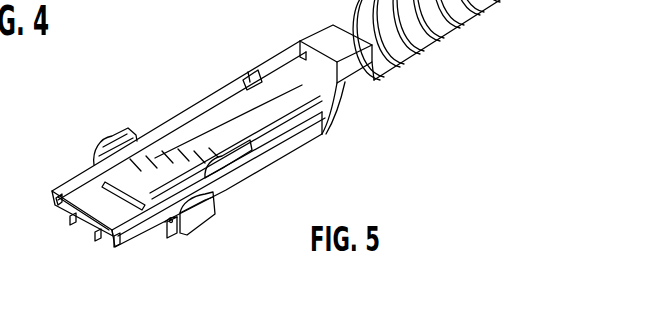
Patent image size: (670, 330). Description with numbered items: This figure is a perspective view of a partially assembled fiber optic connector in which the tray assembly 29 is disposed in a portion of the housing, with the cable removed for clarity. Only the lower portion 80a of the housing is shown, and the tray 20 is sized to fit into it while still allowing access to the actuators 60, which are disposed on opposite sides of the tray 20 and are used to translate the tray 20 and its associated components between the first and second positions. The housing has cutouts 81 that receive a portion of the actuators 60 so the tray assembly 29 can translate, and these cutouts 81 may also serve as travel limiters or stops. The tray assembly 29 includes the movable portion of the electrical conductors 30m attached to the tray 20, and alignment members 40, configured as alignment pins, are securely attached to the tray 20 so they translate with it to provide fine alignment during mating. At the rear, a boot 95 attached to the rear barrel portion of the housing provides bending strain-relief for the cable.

The tray 20 is at (90, 210).
The tray assembly 29 is at (211, 136).
The actuator 60 is at (98, 145).
The cutout 81 is at (243, 191).
The alignment member 40 is at (72, 220).
The movable portion of electrical conductors 30m is at (60, 199).
The lower portion of housing 80a is at (320, 150).
The boot 95 is at (462, 25).